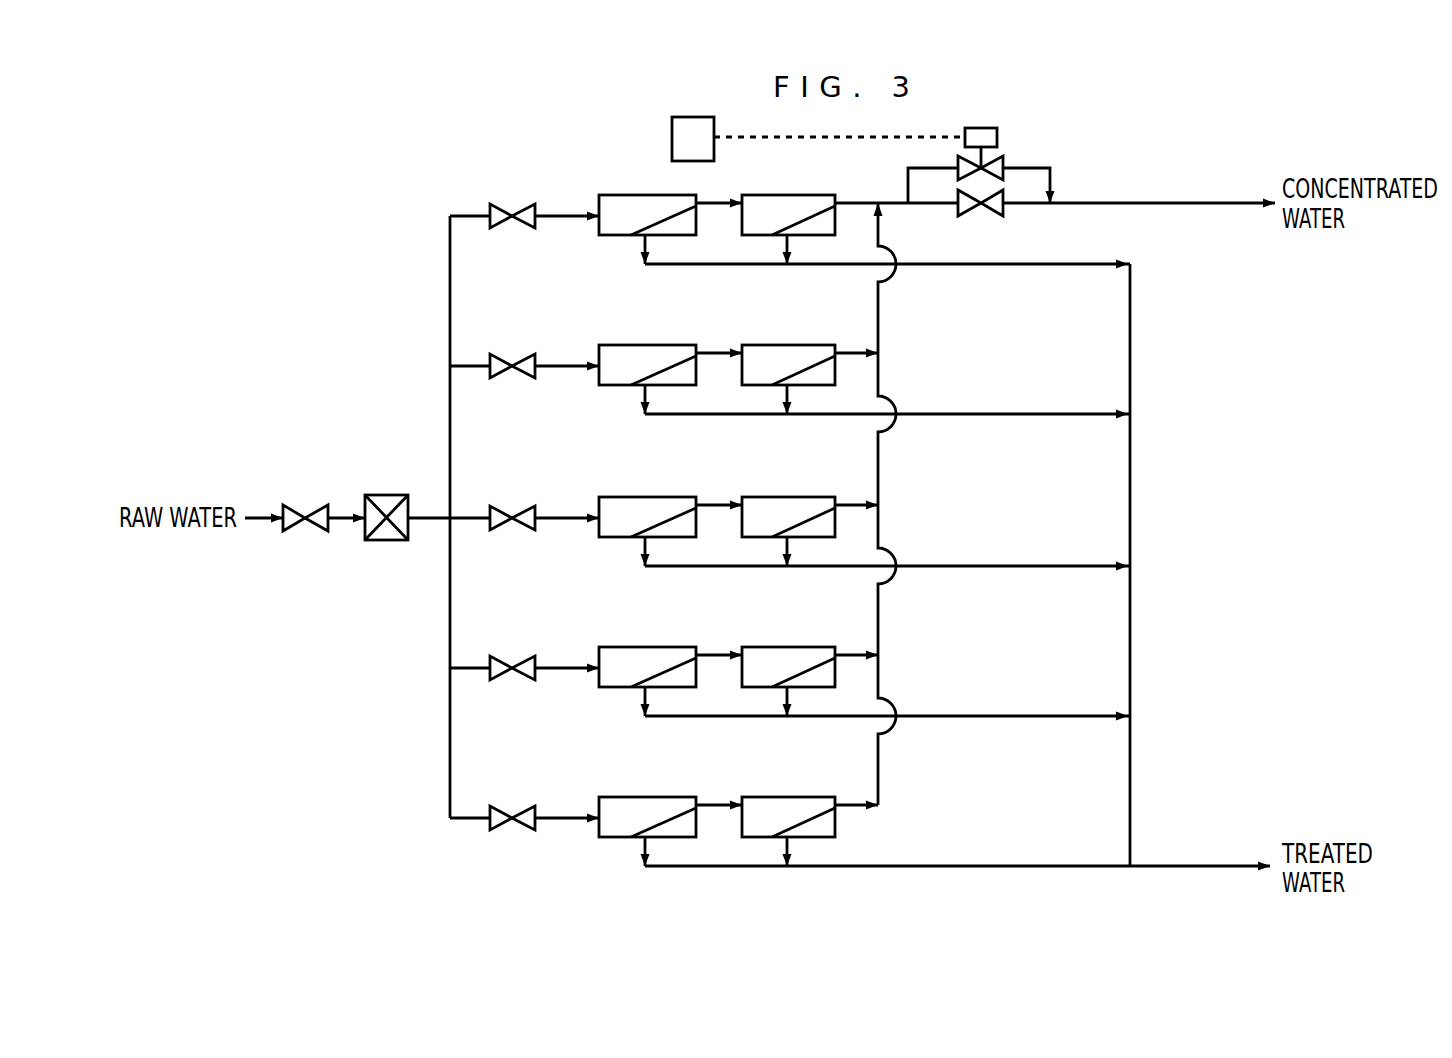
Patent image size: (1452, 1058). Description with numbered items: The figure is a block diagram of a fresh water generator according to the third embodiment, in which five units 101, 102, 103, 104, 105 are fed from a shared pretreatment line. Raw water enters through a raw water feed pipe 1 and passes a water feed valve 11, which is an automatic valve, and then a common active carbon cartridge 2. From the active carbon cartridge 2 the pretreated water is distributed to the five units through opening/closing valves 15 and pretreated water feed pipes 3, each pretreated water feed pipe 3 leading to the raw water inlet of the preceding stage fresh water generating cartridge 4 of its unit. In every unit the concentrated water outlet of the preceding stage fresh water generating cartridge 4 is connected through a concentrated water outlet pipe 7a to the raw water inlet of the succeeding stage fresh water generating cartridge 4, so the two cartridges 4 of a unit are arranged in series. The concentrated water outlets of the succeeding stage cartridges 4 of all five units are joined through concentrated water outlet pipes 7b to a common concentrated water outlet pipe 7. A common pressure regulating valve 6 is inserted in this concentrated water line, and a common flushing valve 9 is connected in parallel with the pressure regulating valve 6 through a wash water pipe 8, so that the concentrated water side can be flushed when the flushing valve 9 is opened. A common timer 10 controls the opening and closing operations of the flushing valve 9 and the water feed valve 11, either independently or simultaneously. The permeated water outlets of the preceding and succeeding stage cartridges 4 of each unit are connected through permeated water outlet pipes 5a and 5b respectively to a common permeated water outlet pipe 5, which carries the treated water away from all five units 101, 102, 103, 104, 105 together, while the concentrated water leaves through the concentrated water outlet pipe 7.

The raw water feed pipe 1 is at (256, 512).
The active carbon cartridge 2 is at (387, 541).
The pretreated water feed pipe 3 is at (430, 522).
The fresh water generating cartridge 4 is at (616, 235).
The permeated water outlet pipe 5 is at (1085, 262).
The permeated water outlet pipe 5a is at (650, 244).
The permeated water outlet pipe 5b is at (792, 244).
The pressure regulating valve 6 is at (981, 217).
The concentrated water outlet pipe 7 is at (1240, 206).
The concentrated water outlet pipe 7a is at (717, 200).
The concentrated water outlet pipe 7b is at (850, 200).
The wash water pipe 8 is at (1052, 185).
The flushing valve 9 is at (1003, 161).
The timer 10 is at (672, 125).
The water feed valve 11 is at (300, 532).
The opening/closing valve 15 is at (510, 228).
The unit 101 is at (589, 172).
The unit 102 is at (589, 322).
The unit 103 is at (589, 474).
The unit 104 is at (589, 624).
The unit 105 is at (589, 774).